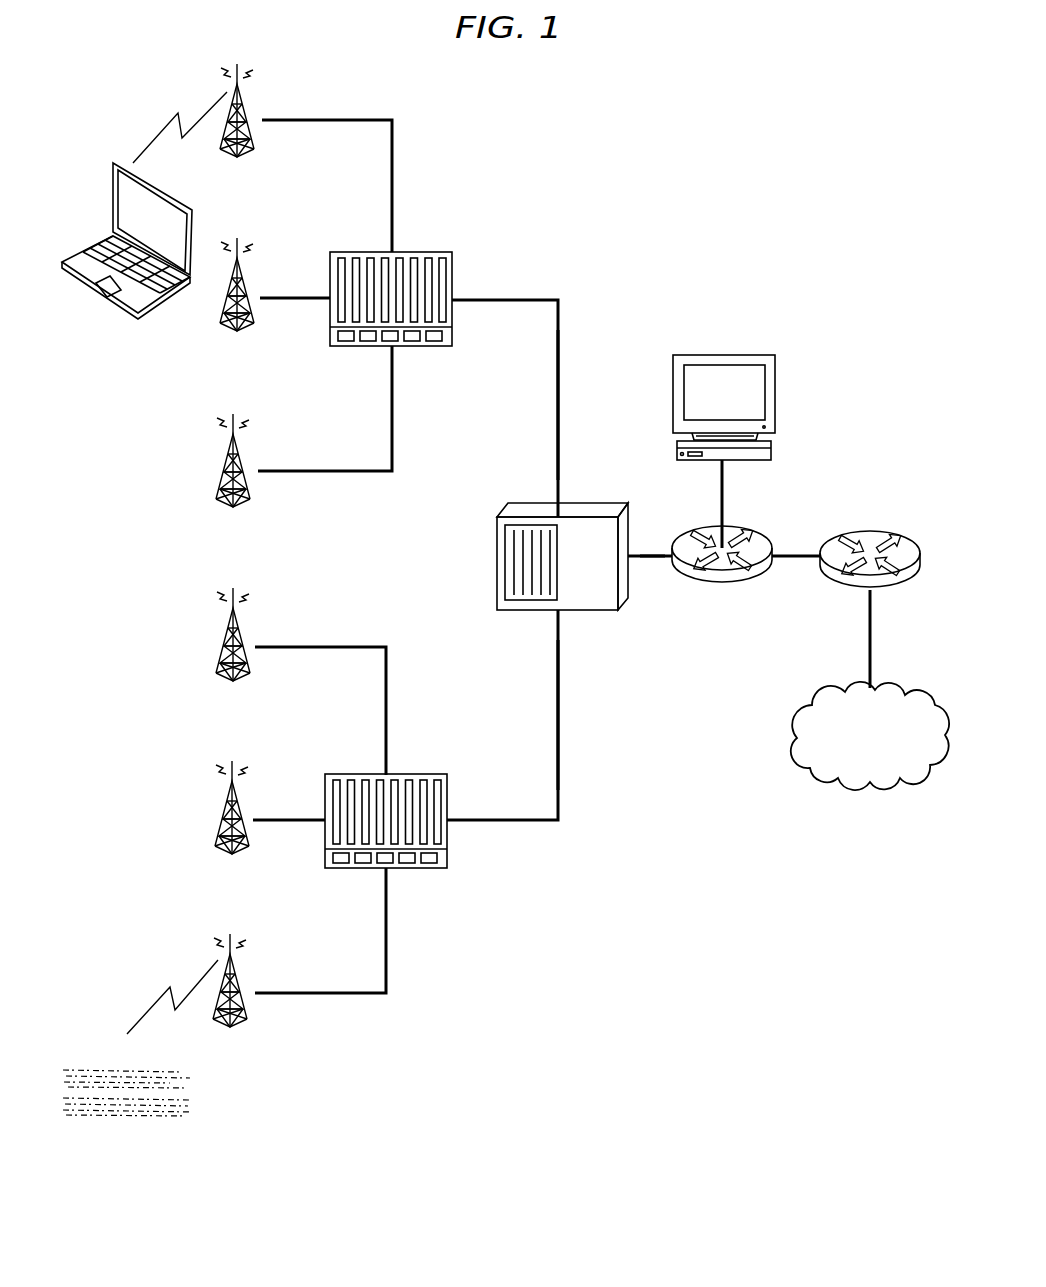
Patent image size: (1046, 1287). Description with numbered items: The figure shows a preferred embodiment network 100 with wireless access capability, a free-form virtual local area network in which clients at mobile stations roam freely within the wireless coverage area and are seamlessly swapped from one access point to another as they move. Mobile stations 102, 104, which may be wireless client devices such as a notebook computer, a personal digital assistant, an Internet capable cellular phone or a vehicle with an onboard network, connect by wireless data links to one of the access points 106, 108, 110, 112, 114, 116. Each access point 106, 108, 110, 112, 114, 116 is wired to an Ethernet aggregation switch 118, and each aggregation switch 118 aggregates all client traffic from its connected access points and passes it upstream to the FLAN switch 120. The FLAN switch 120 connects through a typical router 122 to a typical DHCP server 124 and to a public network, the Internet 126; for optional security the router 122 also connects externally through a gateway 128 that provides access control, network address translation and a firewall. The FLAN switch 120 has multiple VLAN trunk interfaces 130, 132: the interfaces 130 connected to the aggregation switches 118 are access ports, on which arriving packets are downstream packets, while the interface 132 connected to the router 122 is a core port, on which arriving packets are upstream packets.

The free-form virtual local area network 100 is at (724, 908).
The mobile station 102 is at (122, 312).
The mobile station 104 is at (148, 1117).
The access point 106 is at (247, 110).
The access point 108 is at (247, 285).
The access point 110 is at (244, 460).
The access point 112 is at (242, 637).
The access point 114 is at (242, 810).
The access point 116 is at (238, 982).
The Ethernet aggregation switch 118 is at (420, 248).
The FLAN switch 120 is at (590, 503).
The router 122 is at (707, 523).
The DHCP server 124 is at (777, 400).
The Internet 126 is at (850, 783).
The gateway 128 is at (845, 595).
The VLAN trunk interface 130 is at (563, 350).
The VLAN trunk interface 132 is at (647, 560).